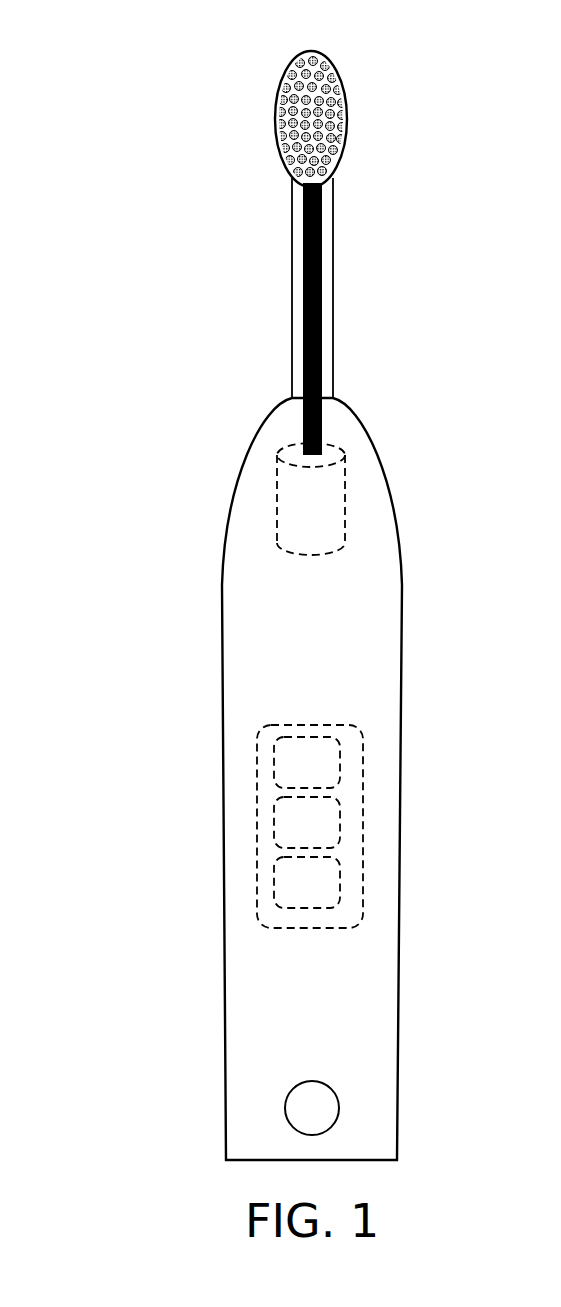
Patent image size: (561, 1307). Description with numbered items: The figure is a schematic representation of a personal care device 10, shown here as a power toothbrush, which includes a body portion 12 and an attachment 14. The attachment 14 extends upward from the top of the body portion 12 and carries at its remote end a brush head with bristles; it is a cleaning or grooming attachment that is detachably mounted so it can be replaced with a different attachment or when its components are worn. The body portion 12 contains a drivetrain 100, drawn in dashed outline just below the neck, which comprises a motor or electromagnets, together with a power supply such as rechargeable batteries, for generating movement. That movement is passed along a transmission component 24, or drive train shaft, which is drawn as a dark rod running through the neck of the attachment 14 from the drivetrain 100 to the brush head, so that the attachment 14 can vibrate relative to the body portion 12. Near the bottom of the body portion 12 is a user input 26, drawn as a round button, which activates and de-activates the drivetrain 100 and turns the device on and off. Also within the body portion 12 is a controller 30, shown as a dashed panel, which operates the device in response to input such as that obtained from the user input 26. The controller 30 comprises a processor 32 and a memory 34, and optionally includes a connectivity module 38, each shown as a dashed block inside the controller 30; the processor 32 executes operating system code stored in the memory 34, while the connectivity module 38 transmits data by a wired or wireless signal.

The personal care device 10 is at (126, 83).
The body portion 12 is at (210, 578).
The attachment 14 is at (251, 295).
The transmission component 24 is at (320, 322).
The user input 26 is at (282, 1108).
The controller 30 is at (263, 810).
The processor 32 is at (338, 763).
The memory 34 is at (338, 823).
The connectivity module 38 is at (338, 879).
The drivetrain 100 is at (337, 498).